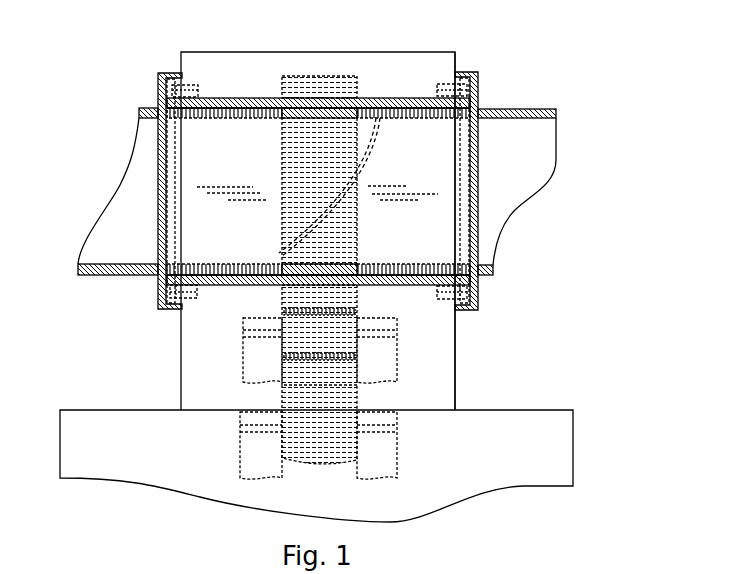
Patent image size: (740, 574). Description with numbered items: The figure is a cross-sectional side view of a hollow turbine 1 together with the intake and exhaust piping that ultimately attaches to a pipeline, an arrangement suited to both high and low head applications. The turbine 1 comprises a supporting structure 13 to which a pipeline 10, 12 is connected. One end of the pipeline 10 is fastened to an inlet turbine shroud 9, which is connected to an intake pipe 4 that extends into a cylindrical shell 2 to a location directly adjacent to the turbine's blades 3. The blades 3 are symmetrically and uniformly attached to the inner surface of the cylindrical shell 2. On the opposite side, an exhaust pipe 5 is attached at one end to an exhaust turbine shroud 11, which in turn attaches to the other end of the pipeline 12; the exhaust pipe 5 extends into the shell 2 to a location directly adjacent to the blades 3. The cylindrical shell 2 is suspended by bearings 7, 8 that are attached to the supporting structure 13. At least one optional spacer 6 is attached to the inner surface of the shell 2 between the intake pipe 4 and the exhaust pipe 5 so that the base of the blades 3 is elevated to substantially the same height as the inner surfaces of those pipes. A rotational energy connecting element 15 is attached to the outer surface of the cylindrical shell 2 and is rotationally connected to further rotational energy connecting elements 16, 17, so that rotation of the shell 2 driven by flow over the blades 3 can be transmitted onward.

The turbine 1 is at (130, 68).
The cylindrical shell 2 is at (258, 99).
The blades 3 is at (381, 150).
The intake pipe 4 is at (205, 118).
The exhaust pipe 5 is at (425, 118).
The spacer 6 is at (268, 118).
The bearing 7 is at (199, 90).
The bearing 8 is at (437, 90).
The inlet turbine shroud 9 is at (160, 296).
The pipeline 10 is at (135, 232).
The exhaust turbine shroud 11 is at (478, 296).
The pipeline 12 is at (522, 157).
The supporting structure 13 is at (457, 346).
The rotational energy connecting element 15 is at (332, 176).
The rotational energy connecting element 16 is at (332, 342).
The rotational energy connecting element 17 is at (332, 415).